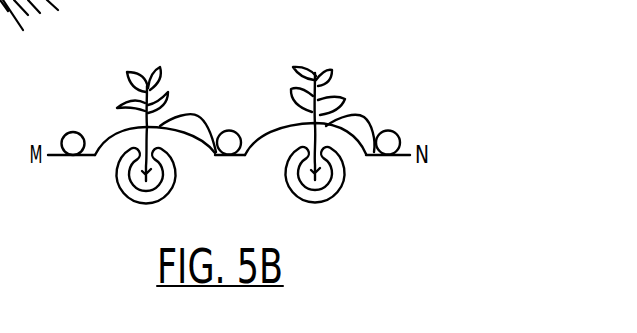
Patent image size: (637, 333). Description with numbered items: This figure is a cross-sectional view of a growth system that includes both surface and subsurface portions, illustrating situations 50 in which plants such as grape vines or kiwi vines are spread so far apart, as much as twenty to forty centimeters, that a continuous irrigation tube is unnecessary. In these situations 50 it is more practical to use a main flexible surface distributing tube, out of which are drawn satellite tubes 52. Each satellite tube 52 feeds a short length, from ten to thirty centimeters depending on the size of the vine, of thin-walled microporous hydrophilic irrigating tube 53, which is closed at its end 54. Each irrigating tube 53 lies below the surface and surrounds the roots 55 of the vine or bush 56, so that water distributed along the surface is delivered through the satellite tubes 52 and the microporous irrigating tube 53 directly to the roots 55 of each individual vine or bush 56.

The situations 50 is at (386, 73).
The satellite tubes 52 is at (197, 116).
The thin-walled microporous hydrophilic irrigating tube 53 is at (162, 188).
The end 54 is at (298, 157).
The roots 55 is at (340, 119).
The vine or bush 56 is at (315, 71).